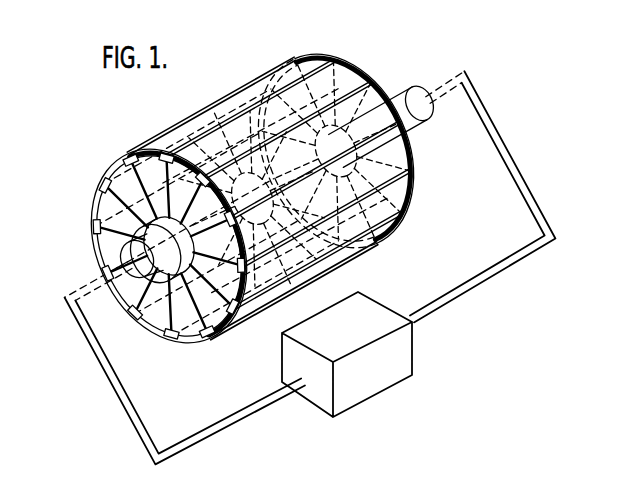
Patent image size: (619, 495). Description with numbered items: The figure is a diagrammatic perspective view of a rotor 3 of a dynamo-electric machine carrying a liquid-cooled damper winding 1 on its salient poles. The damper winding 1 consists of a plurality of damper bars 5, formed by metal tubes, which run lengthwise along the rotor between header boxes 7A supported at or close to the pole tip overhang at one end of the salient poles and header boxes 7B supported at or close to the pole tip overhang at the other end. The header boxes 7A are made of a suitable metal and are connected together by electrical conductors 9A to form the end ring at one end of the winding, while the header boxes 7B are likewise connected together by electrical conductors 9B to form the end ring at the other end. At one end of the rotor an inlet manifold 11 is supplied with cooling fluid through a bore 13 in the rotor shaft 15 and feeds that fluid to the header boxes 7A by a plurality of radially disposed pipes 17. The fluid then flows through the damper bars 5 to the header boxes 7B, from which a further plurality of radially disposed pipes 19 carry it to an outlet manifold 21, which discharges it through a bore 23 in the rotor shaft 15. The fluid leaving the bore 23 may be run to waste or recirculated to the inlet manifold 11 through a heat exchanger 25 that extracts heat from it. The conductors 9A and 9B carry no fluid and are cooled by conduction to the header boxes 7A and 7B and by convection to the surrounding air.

The damper winding 1 is at (397, 185).
The rotor 3 is at (262, 318).
The damper bars 5 is at (213, 127).
The header boxes 7A is at (97, 190).
The header boxes 7B is at (291, 55).
The electrical conductors 9A is at (190, 160).
The electrical conductors 9B is at (356, 70).
The inlet manifold 11 is at (147, 317).
The bore 13 is at (122, 261).
The rotor shaft 15 is at (150, 224).
The radially disposed pipes 17 is at (143, 160).
The radially disposed pipes 19 is at (353, 60).
The outlet manifold 21 is at (266, 192).
The bore 23 is at (420, 123).
The heat exchanger 25 is at (372, 380).